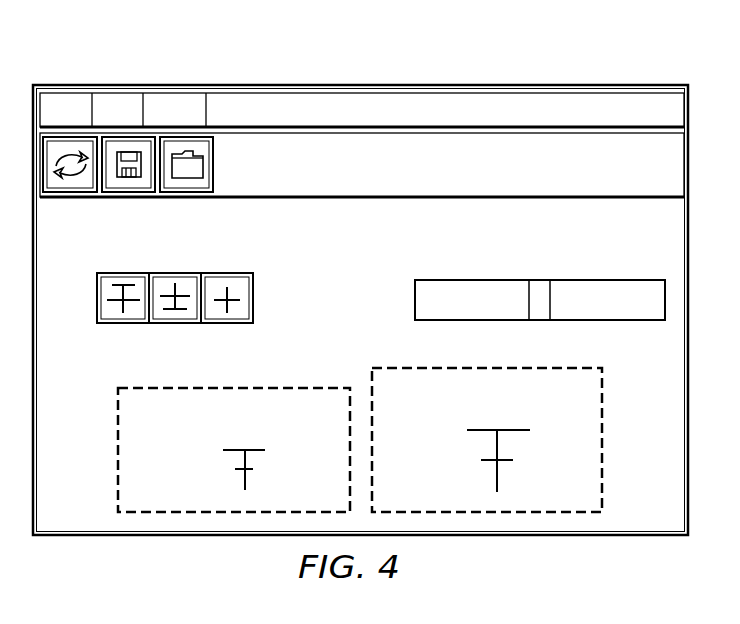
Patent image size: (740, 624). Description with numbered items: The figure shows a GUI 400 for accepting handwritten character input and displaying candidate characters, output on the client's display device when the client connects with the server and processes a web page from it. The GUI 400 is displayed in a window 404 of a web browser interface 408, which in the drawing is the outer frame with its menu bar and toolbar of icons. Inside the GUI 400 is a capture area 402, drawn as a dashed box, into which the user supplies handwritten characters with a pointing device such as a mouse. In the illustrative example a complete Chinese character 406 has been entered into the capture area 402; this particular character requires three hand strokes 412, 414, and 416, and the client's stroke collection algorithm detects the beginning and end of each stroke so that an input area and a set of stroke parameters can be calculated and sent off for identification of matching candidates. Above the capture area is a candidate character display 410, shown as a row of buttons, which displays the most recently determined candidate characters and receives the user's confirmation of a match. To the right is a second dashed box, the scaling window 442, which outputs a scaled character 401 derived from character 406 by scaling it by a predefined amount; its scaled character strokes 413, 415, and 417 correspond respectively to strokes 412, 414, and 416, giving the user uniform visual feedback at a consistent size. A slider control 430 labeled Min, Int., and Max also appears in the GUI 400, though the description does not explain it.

The GUI 400 is at (382, 243).
The scaled character 401 is at (485, 436).
The capture area 402 is at (116, 471).
The window 404 is at (384, 196).
The character 406 is at (229, 452).
The web browser interface 408 is at (256, 83).
The candidate character display 410 is at (254, 300).
The stroke 412 is at (241, 481).
The scaled character stroke 413 is at (494, 471).
The stroke 414 is at (252, 468).
The scaled character stroke 415 is at (506, 458).
The stroke 416 is at (255, 448).
The scaled character stroke 417 is at (514, 428).
The intensity slider 430 is at (540, 278).
The scaling window 442 is at (606, 472).